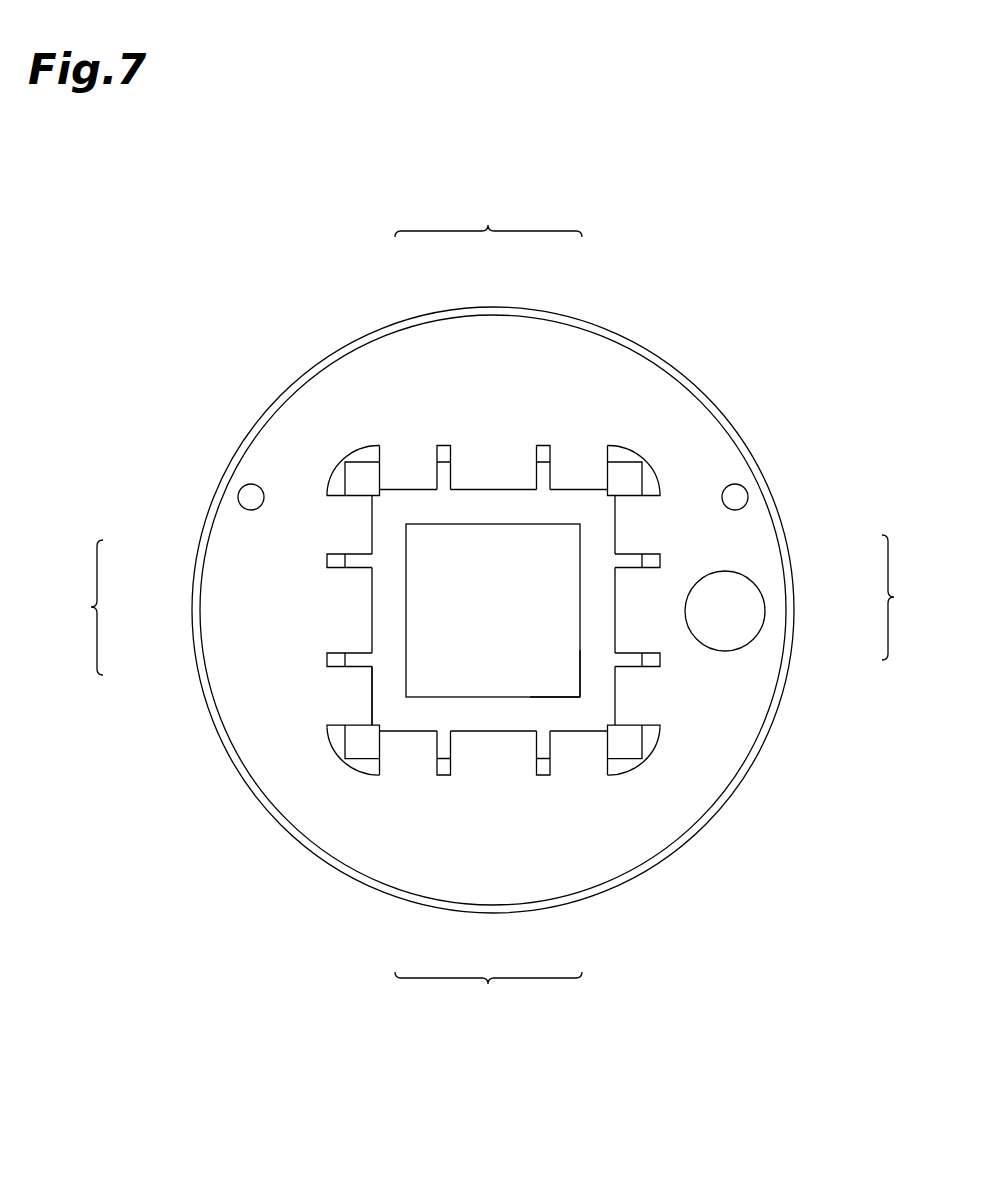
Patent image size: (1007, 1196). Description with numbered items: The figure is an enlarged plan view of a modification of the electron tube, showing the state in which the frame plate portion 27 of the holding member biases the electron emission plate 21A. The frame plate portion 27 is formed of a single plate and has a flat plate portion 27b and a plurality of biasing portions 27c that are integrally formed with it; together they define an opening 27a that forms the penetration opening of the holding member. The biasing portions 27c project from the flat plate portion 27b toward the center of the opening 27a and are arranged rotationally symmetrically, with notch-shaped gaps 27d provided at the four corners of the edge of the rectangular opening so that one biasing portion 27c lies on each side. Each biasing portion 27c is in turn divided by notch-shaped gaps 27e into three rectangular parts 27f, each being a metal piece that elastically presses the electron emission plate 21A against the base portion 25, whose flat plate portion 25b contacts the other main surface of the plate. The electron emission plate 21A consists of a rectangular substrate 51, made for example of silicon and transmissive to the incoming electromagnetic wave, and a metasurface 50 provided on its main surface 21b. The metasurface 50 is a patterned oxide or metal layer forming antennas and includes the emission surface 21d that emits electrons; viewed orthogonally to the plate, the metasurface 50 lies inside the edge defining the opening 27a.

The frame plate portion 27 is at (600, 375).
The base portion 25 is at (222, 478).
The flat plate portion 25b is at (331, 485).
The opening 27a is at (373, 708).
The flat plate portion 27b is at (243, 533).
The biasing portion 27c is at (494, 605).
The notch-shaped gap 27d is at (650, 720).
The notch-shaped gap 27e is at (623, 476).
The part 27f is at (575, 465).
The metasurface 50 is at (593, 517).
The substrate 51 is at (568, 508).
The electron emission plate 21A is at (537, 573).
The main surface 21b is at (552, 705).
The emission surface 21d is at (553, 683).